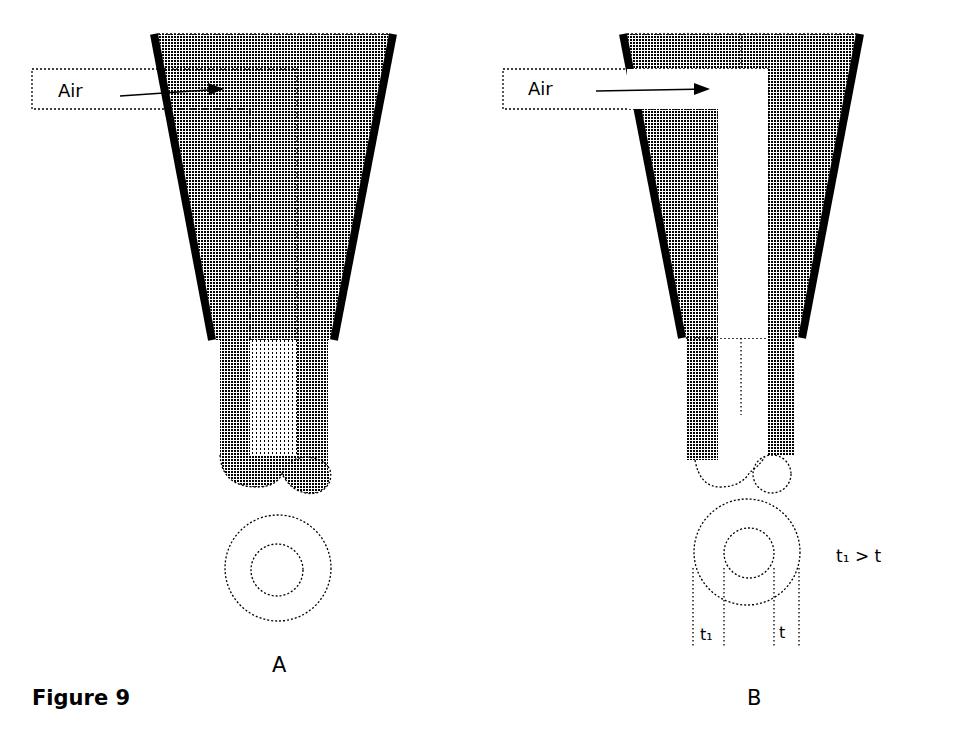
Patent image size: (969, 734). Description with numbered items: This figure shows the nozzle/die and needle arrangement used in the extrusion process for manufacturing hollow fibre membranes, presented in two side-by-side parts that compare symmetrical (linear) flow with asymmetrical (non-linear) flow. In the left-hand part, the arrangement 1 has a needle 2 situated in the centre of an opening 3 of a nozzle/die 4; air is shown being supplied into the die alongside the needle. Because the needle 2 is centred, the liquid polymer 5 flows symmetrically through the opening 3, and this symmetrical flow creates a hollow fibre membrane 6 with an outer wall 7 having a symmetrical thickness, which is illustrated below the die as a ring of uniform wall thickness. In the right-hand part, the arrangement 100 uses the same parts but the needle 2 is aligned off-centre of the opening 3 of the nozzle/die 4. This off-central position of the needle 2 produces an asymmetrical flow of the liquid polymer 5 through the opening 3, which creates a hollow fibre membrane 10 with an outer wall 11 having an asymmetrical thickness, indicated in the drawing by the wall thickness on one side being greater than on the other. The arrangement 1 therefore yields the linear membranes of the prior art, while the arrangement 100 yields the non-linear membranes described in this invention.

The arrangement 1 is at (74, 199).
The needle 2 is at (262, 306).
The opening 3 is at (707, 338).
The nozzle/die 4 is at (203, 343).
The liquid polymer 5 is at (692, 283).
The hollow fibre membrane 6 is at (307, 525).
The outer wall 7 is at (317, 570).
The hollow fibre membrane 10 is at (707, 512).
The outer wall 11 is at (703, 550).
The arrangement 100 is at (552, 207).